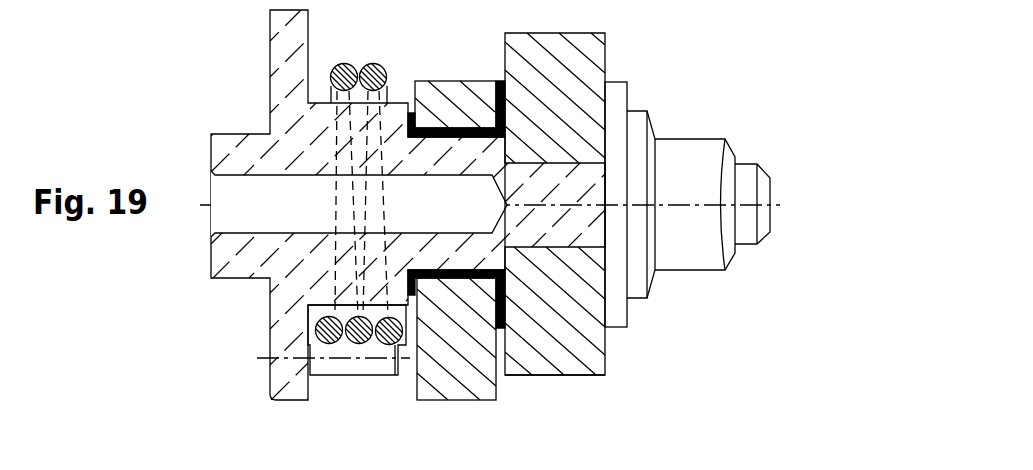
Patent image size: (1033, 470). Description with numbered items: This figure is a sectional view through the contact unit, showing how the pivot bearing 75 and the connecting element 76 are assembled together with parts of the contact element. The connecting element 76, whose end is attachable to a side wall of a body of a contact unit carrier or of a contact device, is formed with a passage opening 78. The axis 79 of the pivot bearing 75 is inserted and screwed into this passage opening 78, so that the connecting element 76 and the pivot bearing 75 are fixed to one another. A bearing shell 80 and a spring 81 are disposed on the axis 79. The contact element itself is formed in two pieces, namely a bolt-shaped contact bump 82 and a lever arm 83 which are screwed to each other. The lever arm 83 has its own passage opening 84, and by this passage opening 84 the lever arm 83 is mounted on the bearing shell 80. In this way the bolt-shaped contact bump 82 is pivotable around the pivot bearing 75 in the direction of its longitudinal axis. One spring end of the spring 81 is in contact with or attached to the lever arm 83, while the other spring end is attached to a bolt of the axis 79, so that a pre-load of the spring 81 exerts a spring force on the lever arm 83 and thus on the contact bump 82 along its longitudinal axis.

The pivot bearing 75 is at (680, 122).
The connecting element 76 is at (553, 357).
The passage opening 78 is at (608, 249).
The axis 79 is at (212, 276).
The bearing shell 80 is at (443, 128).
The spring 81 is at (345, 88).
The bolt-shaped contact bump 82 is at (232, 469).
The lever arm 83 is at (458, 373).
The passage opening 84 is at (603, 375).